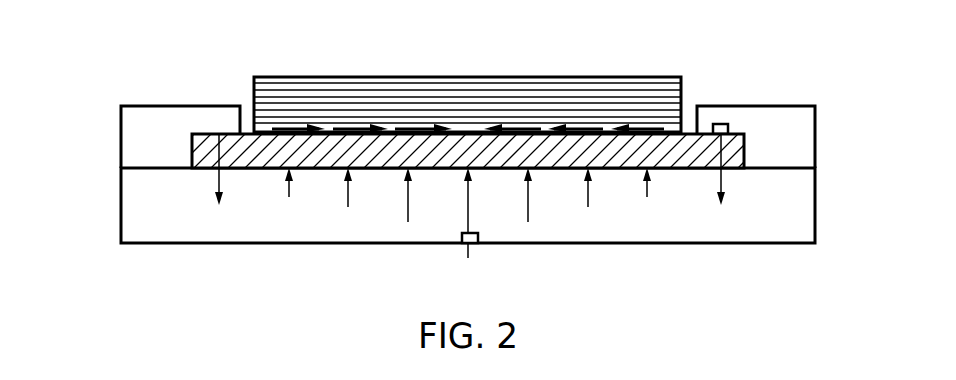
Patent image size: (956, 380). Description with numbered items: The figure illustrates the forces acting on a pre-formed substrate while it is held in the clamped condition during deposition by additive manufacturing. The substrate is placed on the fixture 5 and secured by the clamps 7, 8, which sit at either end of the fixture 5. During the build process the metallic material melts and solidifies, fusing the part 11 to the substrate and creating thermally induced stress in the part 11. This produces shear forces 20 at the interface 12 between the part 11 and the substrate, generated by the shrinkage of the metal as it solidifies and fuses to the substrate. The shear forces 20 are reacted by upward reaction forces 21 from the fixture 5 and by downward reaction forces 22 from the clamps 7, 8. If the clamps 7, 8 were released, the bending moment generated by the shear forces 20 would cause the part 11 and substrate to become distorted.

The fixture 5 is at (121, 203).
The clamp 7 is at (121, 140).
The clamp 8 is at (766, 106).
The part 11 is at (258, 77).
The interface 12 is at (470, 134).
The shear forces 20 is at (310, 128).
The upward reaction forces 21 is at (468, 213).
The downward reaction forces 22 is at (219, 180).